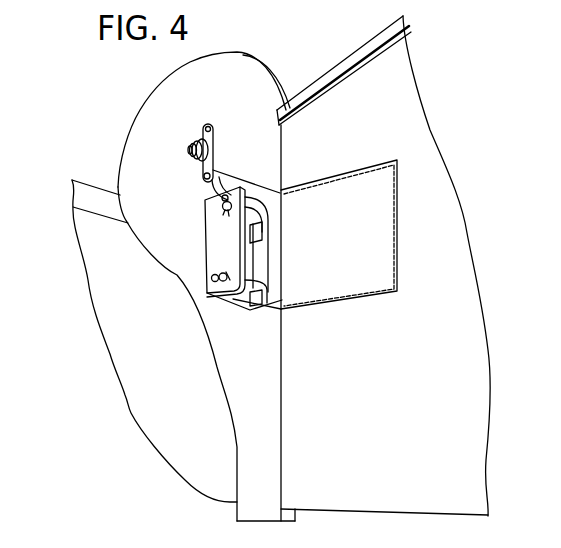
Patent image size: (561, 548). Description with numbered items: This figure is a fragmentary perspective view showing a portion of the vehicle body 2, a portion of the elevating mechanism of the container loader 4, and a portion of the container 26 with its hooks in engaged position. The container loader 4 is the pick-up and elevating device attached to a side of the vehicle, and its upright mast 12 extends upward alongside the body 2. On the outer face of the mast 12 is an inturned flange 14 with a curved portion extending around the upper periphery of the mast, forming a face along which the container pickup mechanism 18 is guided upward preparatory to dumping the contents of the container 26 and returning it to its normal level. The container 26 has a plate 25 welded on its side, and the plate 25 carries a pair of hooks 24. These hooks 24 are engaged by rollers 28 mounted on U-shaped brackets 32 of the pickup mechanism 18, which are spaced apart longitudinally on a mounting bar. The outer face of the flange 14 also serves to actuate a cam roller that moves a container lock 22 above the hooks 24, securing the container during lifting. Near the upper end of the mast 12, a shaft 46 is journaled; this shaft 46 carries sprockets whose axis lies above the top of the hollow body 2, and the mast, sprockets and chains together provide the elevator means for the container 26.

The body 2 is at (111, 357).
The container loader 4 is at (262, 51).
The mast 12 is at (240, 429).
The inturned flange 14 is at (283, 92).
The container pickup mechanism 18 is at (195, 299).
The container lock 22 is at (232, 178).
The hooks 24 is at (252, 232).
The plate 25 is at (345, 180).
The container 26 is at (456, 170).
The rollers 28 is at (259, 283).
The U-shaped brackets 32 is at (205, 210).
The shaft 46 is at (187, 151).